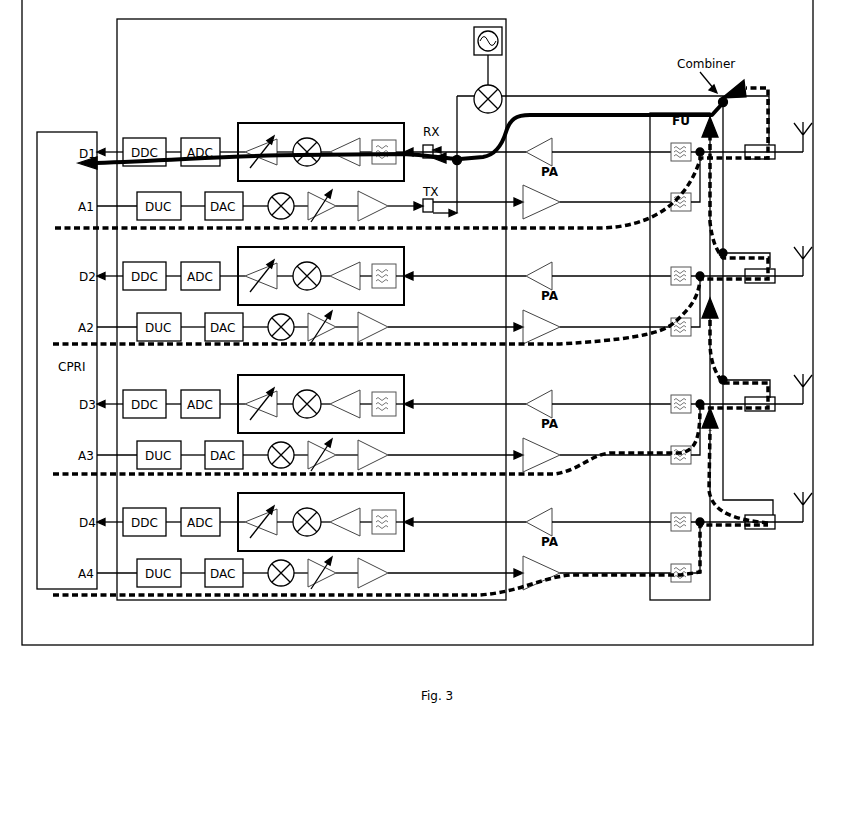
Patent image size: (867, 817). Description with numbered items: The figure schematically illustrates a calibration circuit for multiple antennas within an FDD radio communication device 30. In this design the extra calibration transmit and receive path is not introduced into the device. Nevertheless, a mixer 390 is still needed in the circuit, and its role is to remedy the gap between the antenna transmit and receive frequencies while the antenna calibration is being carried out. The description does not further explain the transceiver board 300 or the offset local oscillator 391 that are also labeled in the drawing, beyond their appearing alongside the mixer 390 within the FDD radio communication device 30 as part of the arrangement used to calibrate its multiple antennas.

The TRXB transceiver board 300 is at (311, 309).
The TX/RX band offset local oscillator 391 is at (446, 56).
The mixer 390 is at (455, 99).
The FDD radio communication device 30 is at (417, 322).